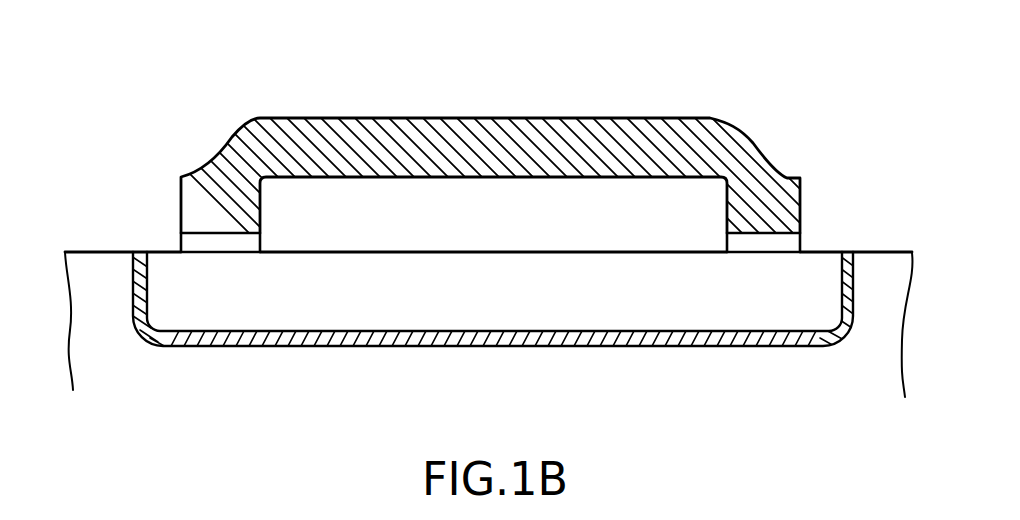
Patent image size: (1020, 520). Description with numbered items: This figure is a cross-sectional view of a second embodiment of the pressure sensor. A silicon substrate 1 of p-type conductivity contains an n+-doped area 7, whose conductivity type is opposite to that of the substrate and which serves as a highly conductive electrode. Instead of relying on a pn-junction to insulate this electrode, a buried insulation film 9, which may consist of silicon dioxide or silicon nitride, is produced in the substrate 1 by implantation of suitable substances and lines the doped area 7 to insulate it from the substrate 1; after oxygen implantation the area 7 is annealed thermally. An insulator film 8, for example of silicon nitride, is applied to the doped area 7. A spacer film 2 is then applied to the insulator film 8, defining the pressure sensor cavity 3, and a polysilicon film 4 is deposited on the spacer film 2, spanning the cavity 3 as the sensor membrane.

The silicon substrate 1 is at (863, 365).
The spacer film 2 is at (713, 193).
The pressure sensor cavity 3 is at (645, 198).
The polysilicon film 4 is at (408, 147).
The doped area 7 is at (820, 283).
The insulator film 8 is at (772, 243).
The buried insulation film 9 is at (507, 343).